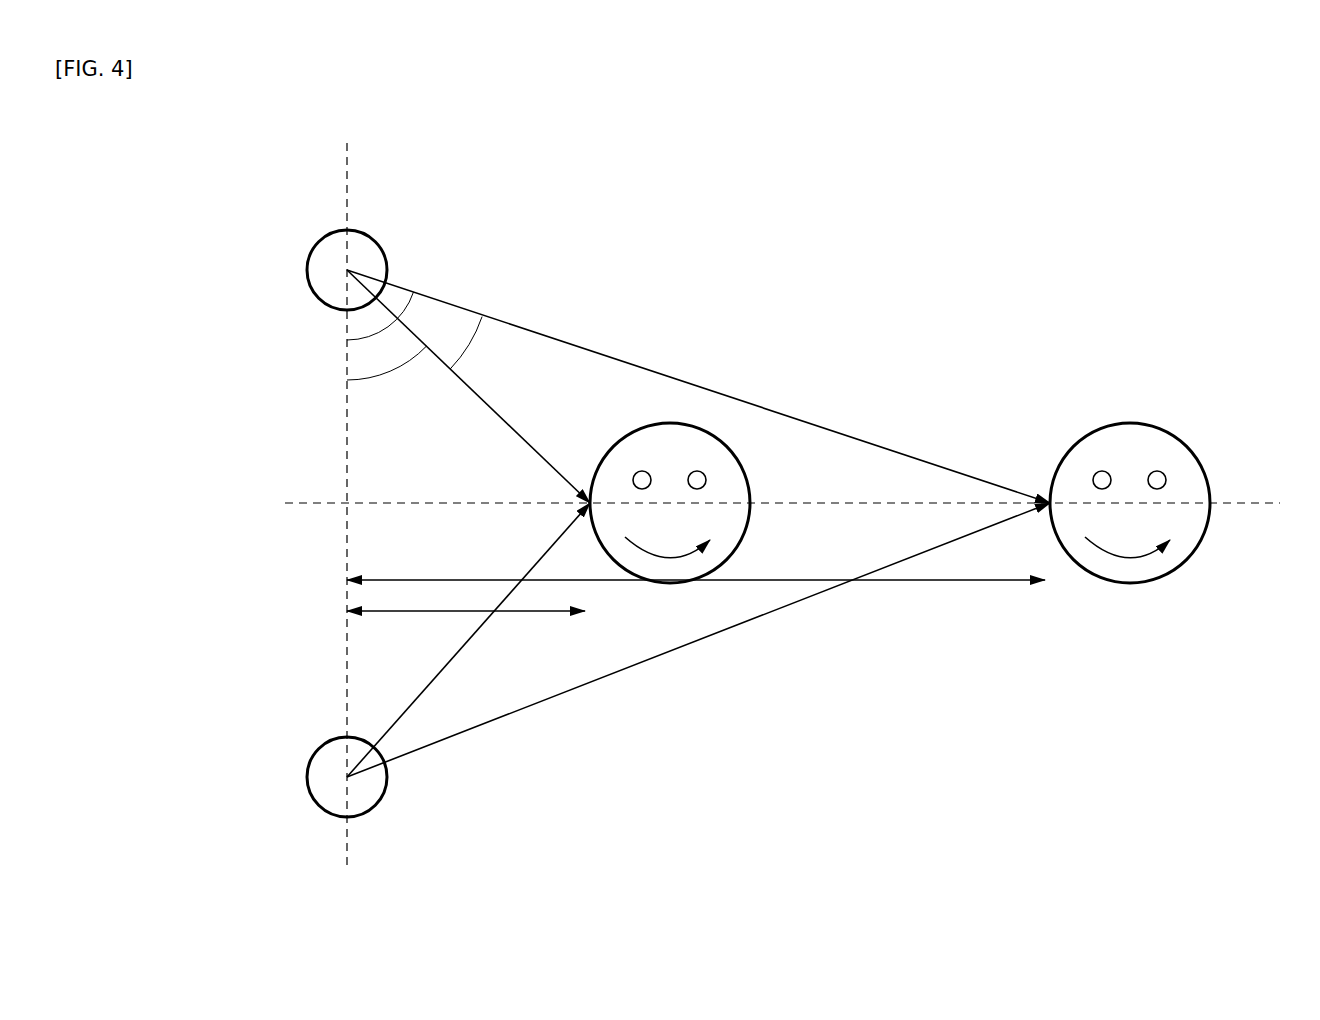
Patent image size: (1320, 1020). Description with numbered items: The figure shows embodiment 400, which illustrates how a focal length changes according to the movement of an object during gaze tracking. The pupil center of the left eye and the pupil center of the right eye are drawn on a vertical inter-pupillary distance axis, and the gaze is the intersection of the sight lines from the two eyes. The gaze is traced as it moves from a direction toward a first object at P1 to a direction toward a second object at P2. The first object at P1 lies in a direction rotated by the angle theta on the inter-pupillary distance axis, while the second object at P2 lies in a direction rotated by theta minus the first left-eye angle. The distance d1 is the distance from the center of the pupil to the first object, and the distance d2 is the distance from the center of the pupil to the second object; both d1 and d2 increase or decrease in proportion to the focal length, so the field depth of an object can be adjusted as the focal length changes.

The embodiment 400 is at (741, 218).
The first object position P1 is at (1130, 521).
The second object position P2 is at (670, 521).
The distance to the first object d1 is at (696, 565).
The distance to the second object d2 is at (466, 628).